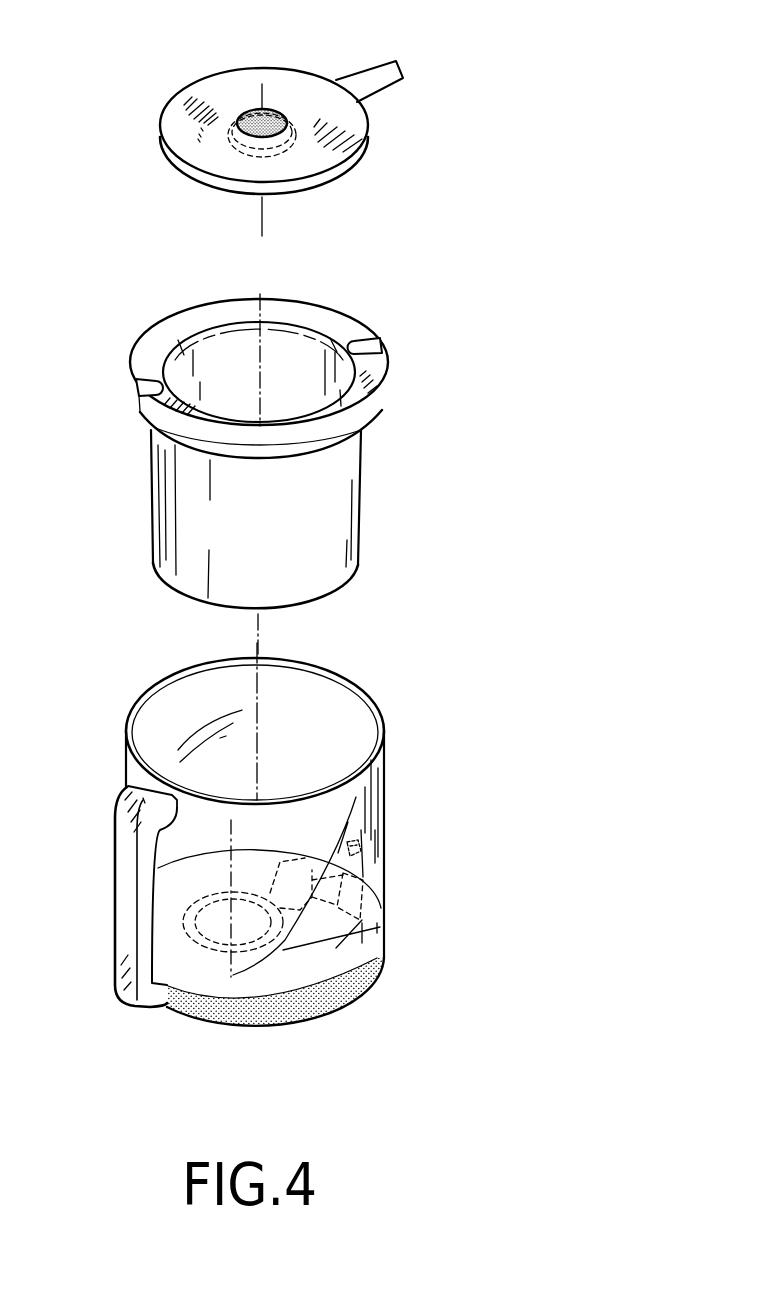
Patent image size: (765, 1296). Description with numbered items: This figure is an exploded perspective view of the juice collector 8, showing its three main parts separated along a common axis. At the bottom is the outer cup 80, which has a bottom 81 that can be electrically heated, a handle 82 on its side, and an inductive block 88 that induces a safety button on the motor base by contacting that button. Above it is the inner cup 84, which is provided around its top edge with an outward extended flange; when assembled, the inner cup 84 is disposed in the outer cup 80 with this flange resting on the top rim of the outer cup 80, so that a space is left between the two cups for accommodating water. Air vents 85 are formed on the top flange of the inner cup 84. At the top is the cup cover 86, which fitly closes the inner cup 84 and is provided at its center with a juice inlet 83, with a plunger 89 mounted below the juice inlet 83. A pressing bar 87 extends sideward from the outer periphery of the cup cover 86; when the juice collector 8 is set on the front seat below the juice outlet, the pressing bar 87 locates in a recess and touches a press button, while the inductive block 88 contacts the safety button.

The juice collector 8 is at (489, 581).
The outer cup 80 is at (362, 743).
The bottom 81 is at (349, 992).
The handle 82 is at (123, 889).
The juice inlet 83 is at (268, 110).
The inner cup 84 is at (343, 492).
The air vents 85 is at (361, 351).
The cup cover 86 is at (173, 115).
The pressing bar 87 is at (389, 74).
The inductive block 88 is at (361, 848).
The plunger 89 is at (293, 138).